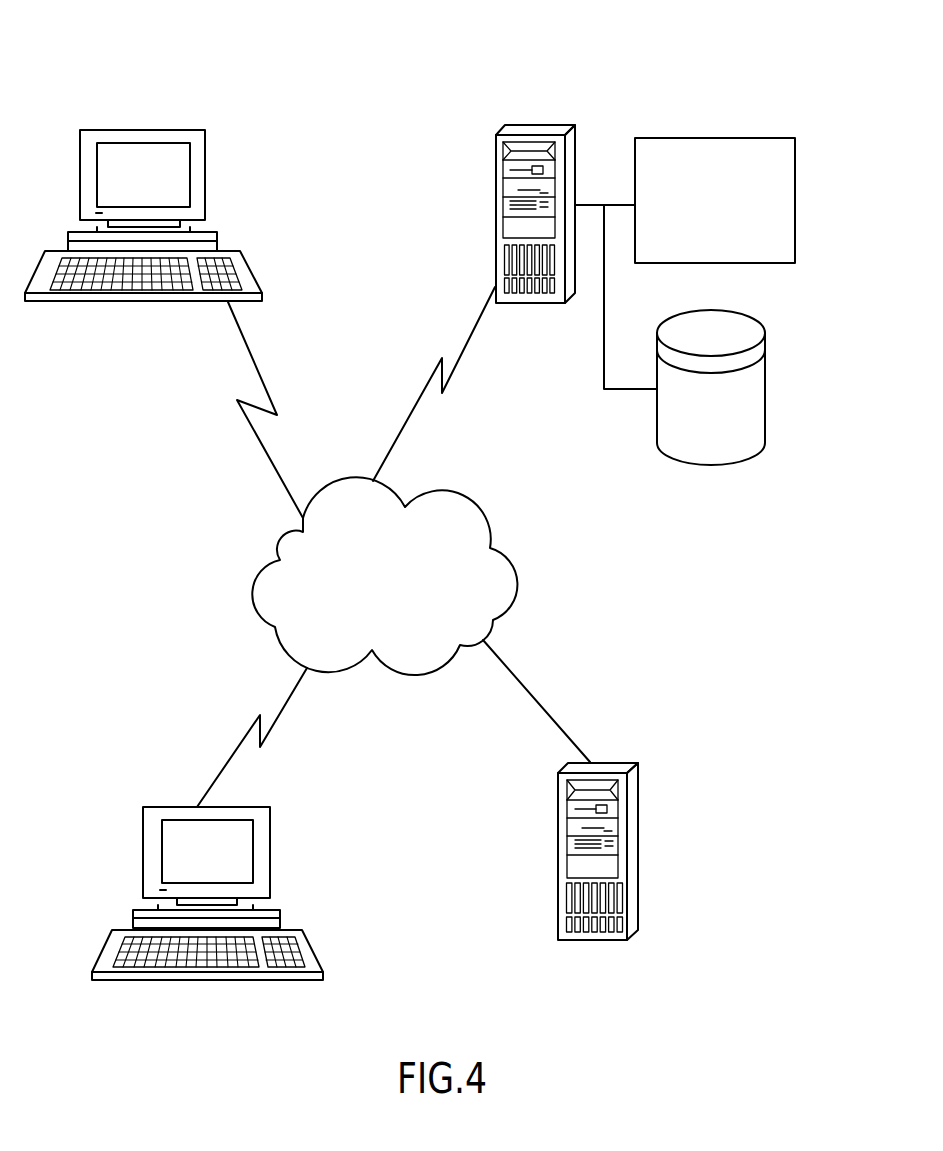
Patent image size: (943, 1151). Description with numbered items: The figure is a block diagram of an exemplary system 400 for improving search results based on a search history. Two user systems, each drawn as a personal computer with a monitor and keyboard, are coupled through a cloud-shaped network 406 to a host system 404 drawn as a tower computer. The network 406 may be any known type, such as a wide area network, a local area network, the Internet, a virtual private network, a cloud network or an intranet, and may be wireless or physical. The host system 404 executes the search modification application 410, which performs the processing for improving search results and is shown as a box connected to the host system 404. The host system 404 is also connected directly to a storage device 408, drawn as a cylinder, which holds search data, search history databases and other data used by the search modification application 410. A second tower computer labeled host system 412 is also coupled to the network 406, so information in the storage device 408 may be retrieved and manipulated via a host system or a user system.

The system 400 is at (84, 77).
The host system 404 is at (578, 138).
The network 406 is at (540, 578).
The storage device 408 is at (767, 400).
The search modification application 410 is at (795, 202).
The host system 412 is at (640, 853).